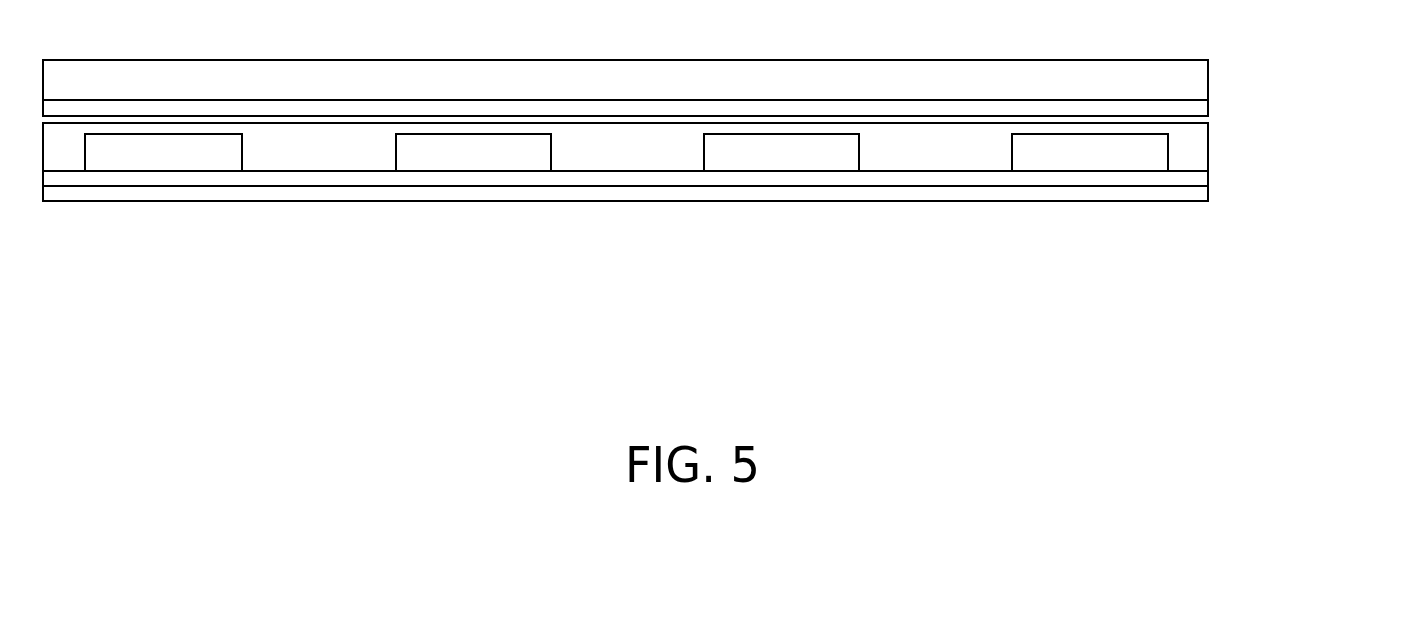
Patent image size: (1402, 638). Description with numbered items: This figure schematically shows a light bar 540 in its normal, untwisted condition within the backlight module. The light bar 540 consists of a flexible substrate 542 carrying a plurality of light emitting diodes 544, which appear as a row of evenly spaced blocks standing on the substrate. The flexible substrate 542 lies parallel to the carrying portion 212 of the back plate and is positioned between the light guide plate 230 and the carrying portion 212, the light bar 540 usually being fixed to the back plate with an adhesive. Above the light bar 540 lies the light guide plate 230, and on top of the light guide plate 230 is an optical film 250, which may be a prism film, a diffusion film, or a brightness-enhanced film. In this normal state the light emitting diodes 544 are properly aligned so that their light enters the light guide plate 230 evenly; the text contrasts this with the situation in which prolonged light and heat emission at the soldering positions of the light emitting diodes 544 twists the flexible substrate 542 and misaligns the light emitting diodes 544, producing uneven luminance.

The optical film 250 is at (1062, 72).
The light guide plate 230 is at (1153, 132).
The light bar 540 is at (1310, 130).
The light emitting diodes 544 is at (1160, 140).
The flexible substrate 542 is at (1190, 177).
The carrying portion 212 is at (1117, 194).